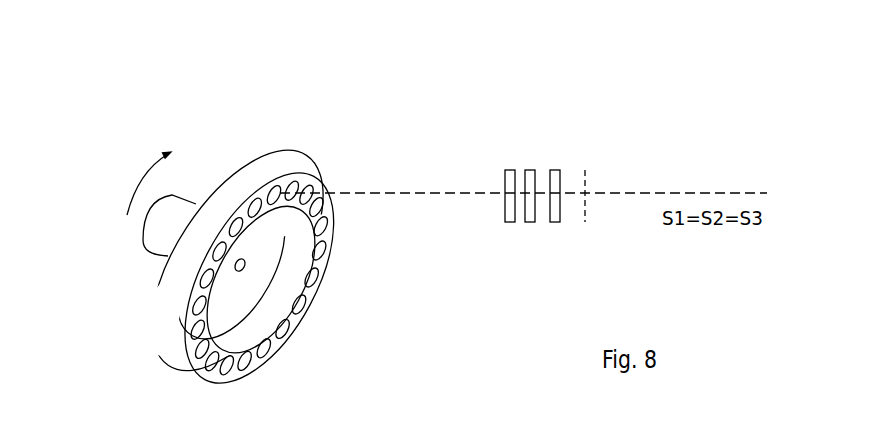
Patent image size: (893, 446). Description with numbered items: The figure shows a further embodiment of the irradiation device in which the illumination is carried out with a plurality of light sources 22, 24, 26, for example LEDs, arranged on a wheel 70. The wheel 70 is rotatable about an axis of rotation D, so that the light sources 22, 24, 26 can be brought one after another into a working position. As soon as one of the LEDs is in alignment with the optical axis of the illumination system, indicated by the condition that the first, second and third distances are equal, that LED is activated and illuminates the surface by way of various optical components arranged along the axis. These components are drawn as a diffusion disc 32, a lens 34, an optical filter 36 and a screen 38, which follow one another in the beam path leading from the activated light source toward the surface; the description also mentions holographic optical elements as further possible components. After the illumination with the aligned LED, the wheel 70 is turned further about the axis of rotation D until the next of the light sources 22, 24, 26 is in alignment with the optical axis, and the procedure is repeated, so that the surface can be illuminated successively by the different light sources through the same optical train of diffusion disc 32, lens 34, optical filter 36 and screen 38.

The light source 22 is at (293, 190).
The light source 24 is at (297, 305).
The light source 26 is at (202, 357).
The wheel 70 is at (163, 320).
The axis of rotation D is at (237, 273).
The diffusion disc 32 is at (512, 178).
The lens 34 is at (533, 182).
The optical filter 36 is at (555, 183).
The screen 38 is at (587, 178).